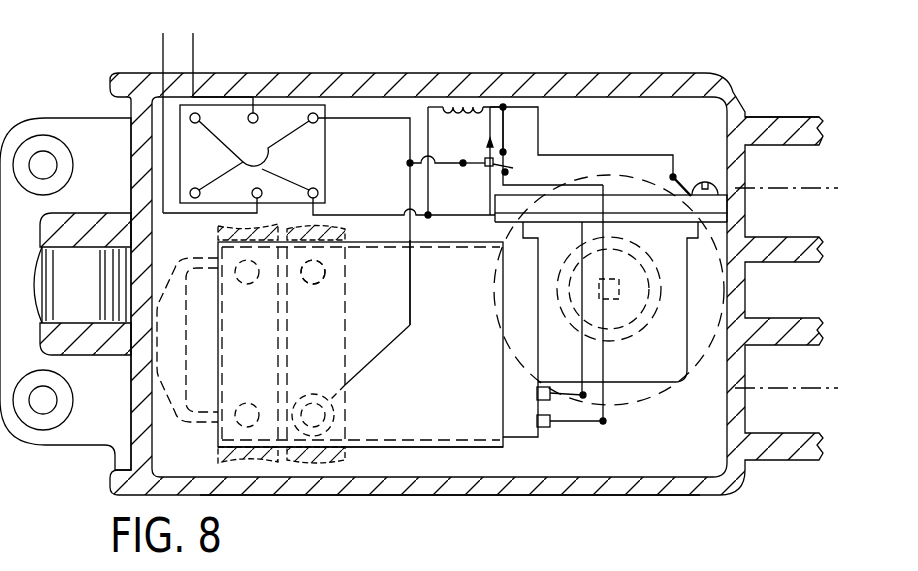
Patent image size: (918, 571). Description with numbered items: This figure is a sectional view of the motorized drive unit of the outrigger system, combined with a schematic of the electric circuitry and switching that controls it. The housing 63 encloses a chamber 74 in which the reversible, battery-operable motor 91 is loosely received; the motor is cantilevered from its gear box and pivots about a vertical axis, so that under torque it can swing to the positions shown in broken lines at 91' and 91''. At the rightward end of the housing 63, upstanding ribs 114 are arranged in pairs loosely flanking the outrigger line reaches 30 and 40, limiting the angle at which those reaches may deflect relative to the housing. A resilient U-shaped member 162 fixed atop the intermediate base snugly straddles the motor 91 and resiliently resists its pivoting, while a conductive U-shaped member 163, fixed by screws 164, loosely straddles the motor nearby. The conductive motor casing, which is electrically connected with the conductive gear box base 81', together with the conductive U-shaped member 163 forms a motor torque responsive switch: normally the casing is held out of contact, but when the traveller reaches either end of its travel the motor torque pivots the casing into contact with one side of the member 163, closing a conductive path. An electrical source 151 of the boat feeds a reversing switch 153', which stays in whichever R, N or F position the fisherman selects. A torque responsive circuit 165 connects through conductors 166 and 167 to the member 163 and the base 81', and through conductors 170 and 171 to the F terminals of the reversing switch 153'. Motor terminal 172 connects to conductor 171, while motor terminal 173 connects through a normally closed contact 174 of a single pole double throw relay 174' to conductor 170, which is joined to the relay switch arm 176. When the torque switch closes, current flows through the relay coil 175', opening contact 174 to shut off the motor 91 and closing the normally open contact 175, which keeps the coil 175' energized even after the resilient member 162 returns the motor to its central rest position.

The outrigger line reach 30 is at (806, 190).
The outrigger line reach 40 is at (810, 388).
The housing 63 is at (717, 508).
The chamber 74 is at (655, 470).
The gear box base 81' is at (746, 206).
The motor 91 is at (360, 344).
The pivoted motor position 91' is at (385, 385).
The pivoted motor position 91'' is at (360, 461).
The upstanding rib 114 is at (793, 132).
The electrical source 151 is at (139, 20).
The reversing switch 153' is at (252, 114).
The resilient U-shaped member 162 is at (218, 235).
The conductive U-shaped member 163 is at (300, 465).
The screw 164 is at (327, 280).
The torque responsive circuit 165 is at (418, 110).
The conductor 166 is at (410, 312).
The conductor 167 is at (645, 156).
The conductor 170 is at (362, 118).
The conductor 171 is at (360, 226).
The motor input terminal 172 is at (548, 387).
The motor input terminal 173 is at (548, 428).
The normally closed relay contact 174 is at (595, 198).
The relay 174' is at (544, 70).
The normally open relay contact 175 is at (543, 129).
The relay coil 175' is at (476, 80).
The relay switch arm 176 is at (472, 168).